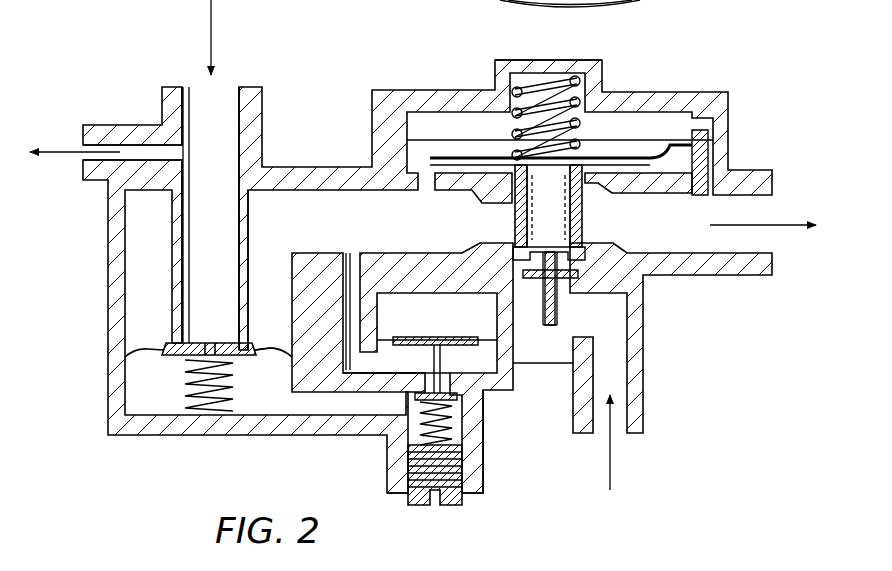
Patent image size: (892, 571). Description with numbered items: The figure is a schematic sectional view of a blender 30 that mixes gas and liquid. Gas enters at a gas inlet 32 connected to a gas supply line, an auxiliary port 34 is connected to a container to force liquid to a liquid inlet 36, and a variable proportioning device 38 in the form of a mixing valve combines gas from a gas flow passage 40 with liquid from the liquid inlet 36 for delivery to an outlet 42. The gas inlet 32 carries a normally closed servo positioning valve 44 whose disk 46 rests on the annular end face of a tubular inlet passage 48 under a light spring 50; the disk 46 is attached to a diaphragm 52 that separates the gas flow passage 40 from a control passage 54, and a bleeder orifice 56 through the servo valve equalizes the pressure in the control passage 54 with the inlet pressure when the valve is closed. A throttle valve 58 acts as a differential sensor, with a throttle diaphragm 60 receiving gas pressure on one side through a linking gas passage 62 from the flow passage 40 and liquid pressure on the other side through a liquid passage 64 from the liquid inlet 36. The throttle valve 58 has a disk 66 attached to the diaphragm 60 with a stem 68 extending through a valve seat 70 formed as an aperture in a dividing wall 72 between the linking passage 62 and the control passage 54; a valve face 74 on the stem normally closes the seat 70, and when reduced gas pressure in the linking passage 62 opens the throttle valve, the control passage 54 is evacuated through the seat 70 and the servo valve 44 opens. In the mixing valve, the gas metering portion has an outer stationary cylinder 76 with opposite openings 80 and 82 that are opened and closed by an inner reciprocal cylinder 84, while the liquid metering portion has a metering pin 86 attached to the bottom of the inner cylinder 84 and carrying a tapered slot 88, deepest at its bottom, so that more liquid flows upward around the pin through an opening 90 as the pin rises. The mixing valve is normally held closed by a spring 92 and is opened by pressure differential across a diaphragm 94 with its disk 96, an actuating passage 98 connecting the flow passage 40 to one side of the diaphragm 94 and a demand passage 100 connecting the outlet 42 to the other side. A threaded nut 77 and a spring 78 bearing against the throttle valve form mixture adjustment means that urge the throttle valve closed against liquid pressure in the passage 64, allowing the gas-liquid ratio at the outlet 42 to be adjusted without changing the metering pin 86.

The blender 30 is at (454, 84).
The gas inlet 32 is at (188, 118).
The auxiliary port 34 is at (92, 153).
The liquid inlet 36 is at (598, 415).
The variable proportioning device 38 is at (600, 148).
The gas flow passage 40 is at (302, 206).
The outlet 42 is at (748, 207).
The servo positioning valve 44 is at (168, 372).
The disk 46 is at (200, 342).
The tubular inlet passage 48 is at (185, 298).
The light spring 50 is at (190, 395).
The diaphragm 52 is at (265, 345).
The control passage 54 is at (258, 398).
The bleeder orifice 56 is at (222, 343).
The throttle valve 58 is at (454, 358).
The throttle diaphragm 60 is at (390, 340).
The linking gas passage 62 is at (352, 258).
The liquid passage 64 is at (477, 305).
The disk 66 is at (460, 335).
The stem 68 is at (432, 356).
The valve seat 70 is at (490, 425).
The dividing wall 72 is at (360, 385).
The valve face 74 is at (415, 398).
The outer stationary cylinder 76 is at (517, 208).
The threaded nut 77 is at (445, 505).
The spring 78 is at (430, 415).
The opening 80 is at (517, 232).
The opening 82 is at (577, 218).
The inner reciprocal cylinder 84 is at (560, 188).
The metering pin 86 is at (558, 295).
The tapered slot 88 is at (542, 305).
The opening 90 is at (562, 290).
The spring 92 is at (600, 88).
The diaphragm 94 is at (455, 147).
The disk 96 is at (484, 160).
The actuating passage 98 is at (424, 185).
The demand passage 100 is at (710, 140).